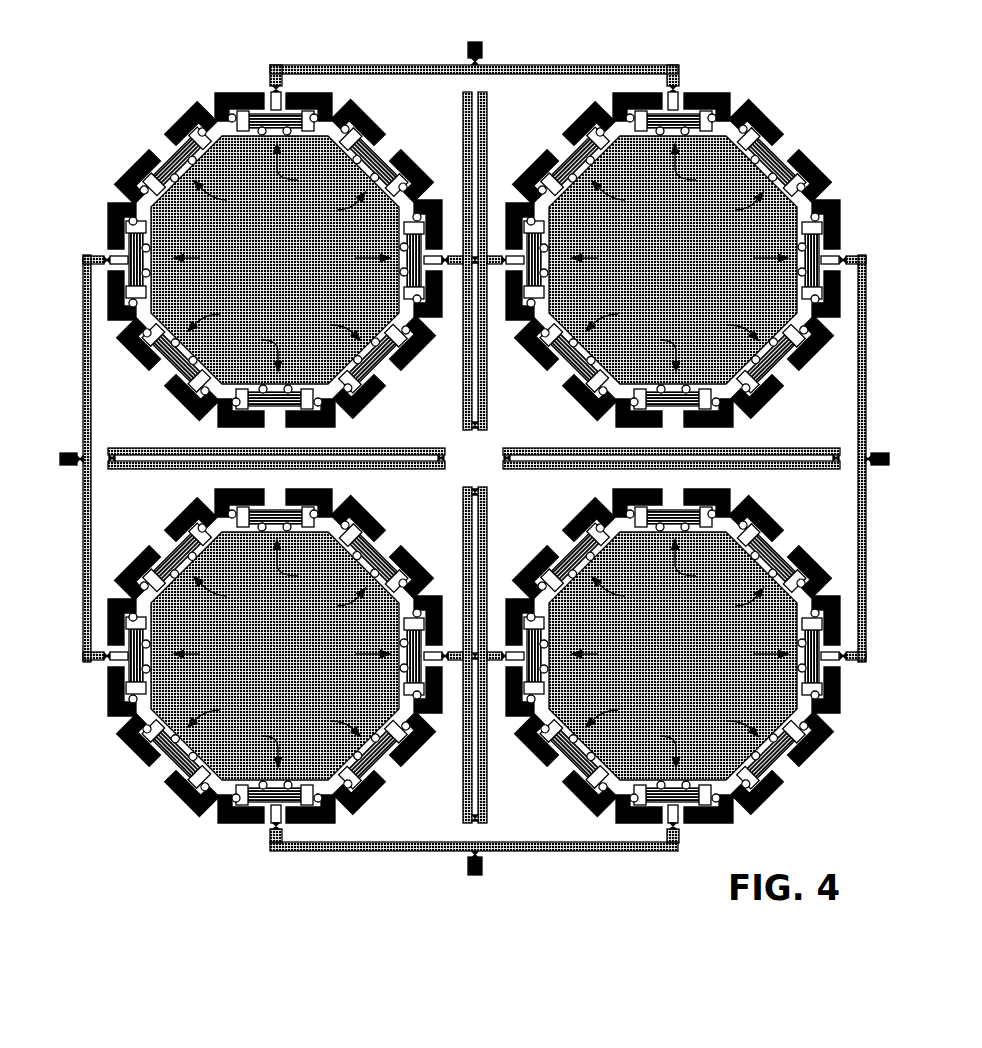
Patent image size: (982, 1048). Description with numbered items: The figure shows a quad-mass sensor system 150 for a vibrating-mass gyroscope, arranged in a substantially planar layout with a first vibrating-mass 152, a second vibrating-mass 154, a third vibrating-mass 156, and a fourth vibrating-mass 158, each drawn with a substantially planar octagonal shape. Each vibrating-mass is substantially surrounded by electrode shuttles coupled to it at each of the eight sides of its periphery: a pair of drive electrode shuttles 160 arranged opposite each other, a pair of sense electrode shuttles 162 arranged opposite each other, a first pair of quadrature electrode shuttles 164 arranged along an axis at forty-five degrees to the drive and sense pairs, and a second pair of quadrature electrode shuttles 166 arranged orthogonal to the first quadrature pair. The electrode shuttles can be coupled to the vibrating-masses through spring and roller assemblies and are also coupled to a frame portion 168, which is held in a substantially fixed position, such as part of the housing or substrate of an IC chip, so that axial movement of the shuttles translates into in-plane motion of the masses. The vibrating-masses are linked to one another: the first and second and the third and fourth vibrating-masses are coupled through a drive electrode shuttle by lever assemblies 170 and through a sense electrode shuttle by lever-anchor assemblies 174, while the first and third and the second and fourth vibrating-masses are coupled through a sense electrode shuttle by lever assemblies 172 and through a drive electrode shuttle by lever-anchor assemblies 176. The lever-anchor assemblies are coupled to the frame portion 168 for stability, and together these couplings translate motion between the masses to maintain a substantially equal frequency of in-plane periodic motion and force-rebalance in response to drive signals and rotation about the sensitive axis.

The sensor system 150 is at (116, 18).
The first vibrating-mass 152 is at (290, 269).
The second vibrating-mass 154 is at (688, 269).
The third vibrating-mass 156 is at (290, 665).
The fourth vibrating-mass 158 is at (688, 665).
The drive electrode shuttles 160 is at (478, 455).
The sense electrode shuttles 162 is at (481, 456).
The first pair of quadrature electrode shuttles 164 is at (476, 460).
The second pair of quadrature electrode shuttles 166 is at (476, 460).
The frame portion 168 is at (485, 45).
The lever assemblies 170 is at (462, 122).
The lever assemblies 172 is at (190, 470).
The lever-anchor assemblies 174 is at (320, 65).
The lever-anchor assemblies 176 is at (95, 530).